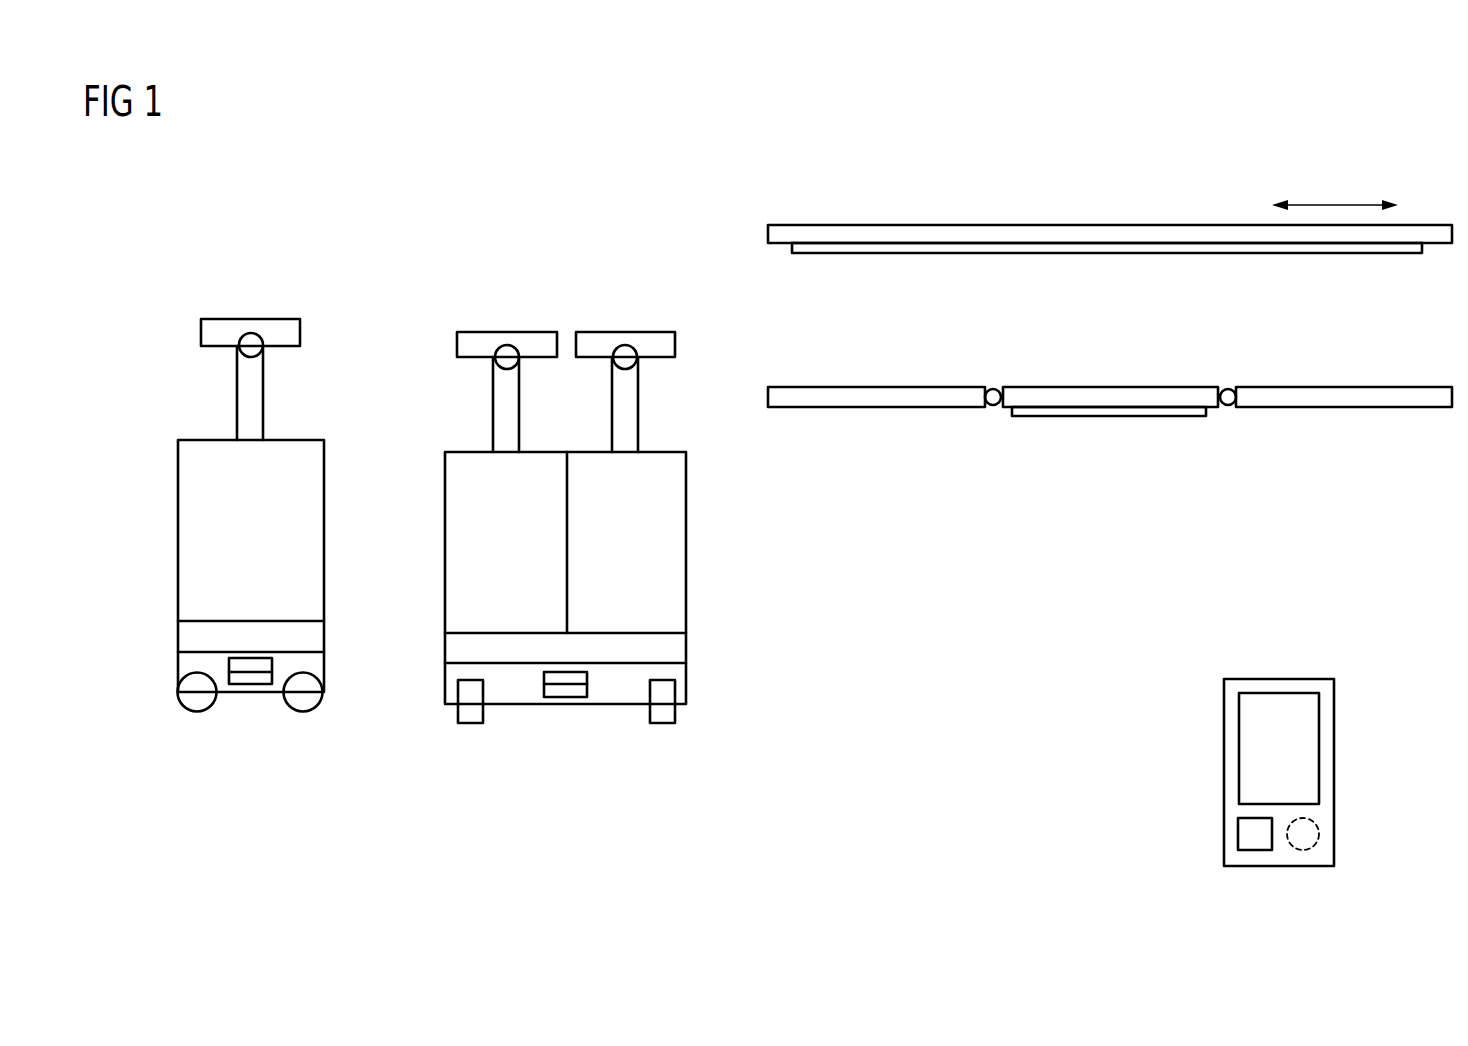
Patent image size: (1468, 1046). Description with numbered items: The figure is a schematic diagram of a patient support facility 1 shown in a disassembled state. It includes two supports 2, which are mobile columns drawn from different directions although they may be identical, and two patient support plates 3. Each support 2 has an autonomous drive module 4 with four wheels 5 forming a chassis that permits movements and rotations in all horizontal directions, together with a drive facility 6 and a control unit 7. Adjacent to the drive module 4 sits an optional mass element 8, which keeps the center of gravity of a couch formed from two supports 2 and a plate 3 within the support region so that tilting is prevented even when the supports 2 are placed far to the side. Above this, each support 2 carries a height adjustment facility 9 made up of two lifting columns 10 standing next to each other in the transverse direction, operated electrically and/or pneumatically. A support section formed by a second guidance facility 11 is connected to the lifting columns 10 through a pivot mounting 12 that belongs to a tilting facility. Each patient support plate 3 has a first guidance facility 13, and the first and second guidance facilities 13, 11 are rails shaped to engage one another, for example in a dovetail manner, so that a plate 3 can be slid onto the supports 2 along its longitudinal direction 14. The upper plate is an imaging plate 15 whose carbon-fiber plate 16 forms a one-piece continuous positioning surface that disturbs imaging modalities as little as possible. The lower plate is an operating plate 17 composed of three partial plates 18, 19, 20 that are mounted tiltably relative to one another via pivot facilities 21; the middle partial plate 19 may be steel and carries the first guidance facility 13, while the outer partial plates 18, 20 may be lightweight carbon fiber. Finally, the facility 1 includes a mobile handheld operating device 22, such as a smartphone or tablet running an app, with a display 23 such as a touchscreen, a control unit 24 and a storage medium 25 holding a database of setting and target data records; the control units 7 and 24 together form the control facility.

The patient support facility 1 is at (868, 722).
The support 2 is at (246, 832).
The patient support plate 3 is at (1141, 171).
The autonomous drive module 4 is at (178, 668).
The wheel 5 is at (197, 712).
The drive facility 6 is at (243, 686).
The control unit 7 is at (260, 672).
The mass element 8 is at (178, 632).
The height adjustment facility 9 is at (156, 566).
The lifting column 10 is at (178, 505).
The second guidance facility 11 is at (212, 319).
The pivot mounting 12 is at (251, 333).
The first guidance facility 13 is at (1072, 255).
The longitudinal direction 14 is at (1340, 203).
The imaging plate 15 is at (978, 225).
The carbon-fiber plate 16 is at (1037, 235).
The operating plate 17 is at (768, 396).
The partial plate 18 is at (878, 395).
The middle partial plate 19 is at (1148, 395).
The partial plate 20 is at (1348, 395).
The pivot facility 21 is at (992, 389).
The mobile handheld operating device 22 is at (1334, 745).
The display 23 is at (1239, 739).
The control unit 24 is at (1238, 833).
The storage medium 25 is at (1319, 838).